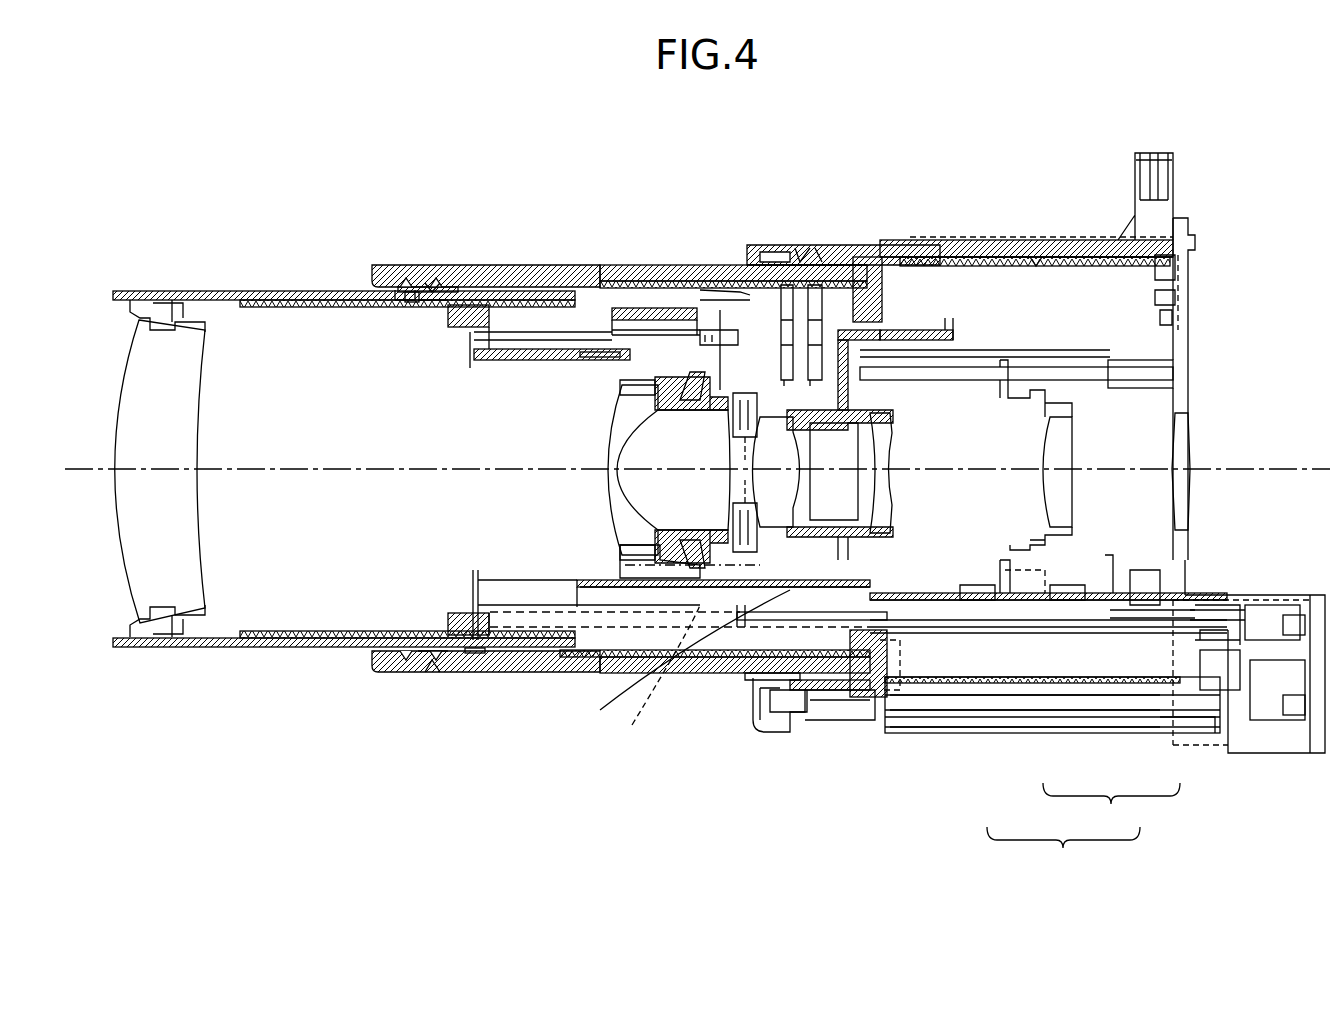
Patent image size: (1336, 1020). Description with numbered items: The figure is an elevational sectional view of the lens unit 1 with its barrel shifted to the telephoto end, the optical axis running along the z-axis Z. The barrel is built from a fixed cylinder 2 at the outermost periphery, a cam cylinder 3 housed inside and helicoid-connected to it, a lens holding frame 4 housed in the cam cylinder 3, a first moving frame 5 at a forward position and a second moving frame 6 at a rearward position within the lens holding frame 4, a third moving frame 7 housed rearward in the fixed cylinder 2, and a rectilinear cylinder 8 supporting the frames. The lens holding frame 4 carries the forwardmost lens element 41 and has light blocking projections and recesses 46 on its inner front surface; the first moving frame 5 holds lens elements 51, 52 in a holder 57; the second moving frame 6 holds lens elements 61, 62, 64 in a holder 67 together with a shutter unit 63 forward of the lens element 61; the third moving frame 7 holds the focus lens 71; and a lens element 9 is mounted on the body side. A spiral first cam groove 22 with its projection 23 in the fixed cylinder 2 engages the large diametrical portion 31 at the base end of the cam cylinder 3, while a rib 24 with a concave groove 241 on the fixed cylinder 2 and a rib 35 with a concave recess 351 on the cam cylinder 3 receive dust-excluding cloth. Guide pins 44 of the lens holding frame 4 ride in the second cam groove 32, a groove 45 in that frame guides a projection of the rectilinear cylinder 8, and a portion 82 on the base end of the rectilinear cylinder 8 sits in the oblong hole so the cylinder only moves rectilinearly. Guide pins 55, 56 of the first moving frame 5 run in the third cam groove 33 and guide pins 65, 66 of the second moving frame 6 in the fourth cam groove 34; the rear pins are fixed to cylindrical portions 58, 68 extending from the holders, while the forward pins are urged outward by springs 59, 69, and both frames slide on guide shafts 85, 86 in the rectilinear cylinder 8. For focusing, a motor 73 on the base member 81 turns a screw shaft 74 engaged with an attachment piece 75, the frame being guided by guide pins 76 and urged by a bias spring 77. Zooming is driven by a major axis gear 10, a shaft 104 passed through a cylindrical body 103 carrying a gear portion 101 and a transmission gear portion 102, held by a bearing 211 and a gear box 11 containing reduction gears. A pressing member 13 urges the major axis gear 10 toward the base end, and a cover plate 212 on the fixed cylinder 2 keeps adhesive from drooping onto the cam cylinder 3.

The lens unit 1 is at (205, 124).
The fixed cylinder 2 is at (893, 240).
The cam cylinder 3 is at (680, 265).
The lens holding frame 4 is at (205, 290).
The first moving frame 5 is at (650, 383).
The second moving frame 6 is at (870, 421).
The third moving frame 7 is at (1040, 393).
The rectilinear cylinder 8 is at (452, 328).
The lens element 9 is at (1190, 440).
The major axis gear 10 is at (1032, 772).
The gear box 11 is at (1258, 754).
The pressing member 13 is at (800, 713).
The first cam groove 22 is at (1000, 240).
The projection 23 is at (1038, 266).
The rib 24 is at (772, 244).
The large diametrical portion 31 is at (858, 258).
The second cam groove 32 is at (428, 265).
The third cam groove 33 is at (760, 680).
The fourth cam groove 34 is at (802, 248).
The rib 35 is at (412, 305).
The forwardmost lens element 41 is at (200, 395).
The guide pins 44 is at (436, 302).
The groove 45 is at (436, 673).
The light blocking projections and recesses 46 is at (285, 300).
The lens element 51 is at (632, 414).
The lens element 52 is at (678, 450).
The guide pin 55 is at (890, 643).
The guide pin 56 is at (890, 670).
The holder 57 is at (645, 573).
The cylindrical portion 58 is at (685, 662).
The spring 59 is at (658, 682).
The lens element 61 is at (790, 453).
The lens element 62 is at (840, 485).
The shutter unit 63 is at (855, 370).
The lens element 64 is at (885, 505).
The guide pin 65 is at (725, 290).
The guide pin 66 is at (830, 305).
The holder 67 is at (855, 395).
The cylindrical portion 68 is at (930, 330).
The spring 69 is at (772, 372).
The focus lens 71 is at (1052, 442).
The motor 73 is at (1150, 633).
The screw shaft 74 is at (950, 593).
The attachment piece 75 is at (985, 585).
The guide pins 76 is at (975, 367).
The bias spring 77 is at (760, 630).
The base member 81 is at (1188, 328).
The engaging portion 82 is at (870, 721).
The guide shaft 85 is at (525, 595).
The guide shaft 86 is at (505, 362).
The gear portion 101 is at (1068, 712).
The transmission gear portion 102 is at (1160, 727).
The cylindrical body 103 is at (1111, 804).
The shaft 104 is at (1010, 697).
The bearing 211 is at (762, 733).
The cover plate 212 is at (795, 690).
The concave groove 241 is at (750, 248).
The concave recess 351 is at (400, 303).
The z-axis Z is at (697, 461).